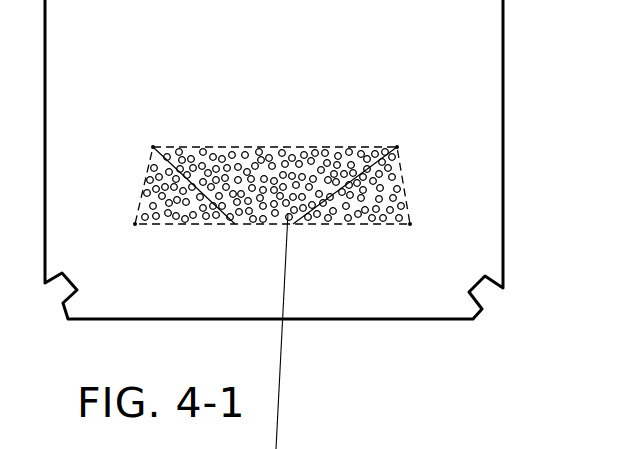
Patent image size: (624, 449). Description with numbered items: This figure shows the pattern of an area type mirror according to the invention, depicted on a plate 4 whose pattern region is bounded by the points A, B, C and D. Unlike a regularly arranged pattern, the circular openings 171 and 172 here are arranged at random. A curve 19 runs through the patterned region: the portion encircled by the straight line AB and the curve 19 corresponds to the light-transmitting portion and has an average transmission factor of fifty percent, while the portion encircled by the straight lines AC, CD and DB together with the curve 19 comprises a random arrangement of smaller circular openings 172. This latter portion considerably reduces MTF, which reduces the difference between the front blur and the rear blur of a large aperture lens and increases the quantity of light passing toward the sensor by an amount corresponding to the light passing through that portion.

The plate-shaped member 4 is at (489, 75).
The circular opening 171 is at (186, 149).
The circular opening 172 is at (226, 148).
The curve 19 is at (233, 226).